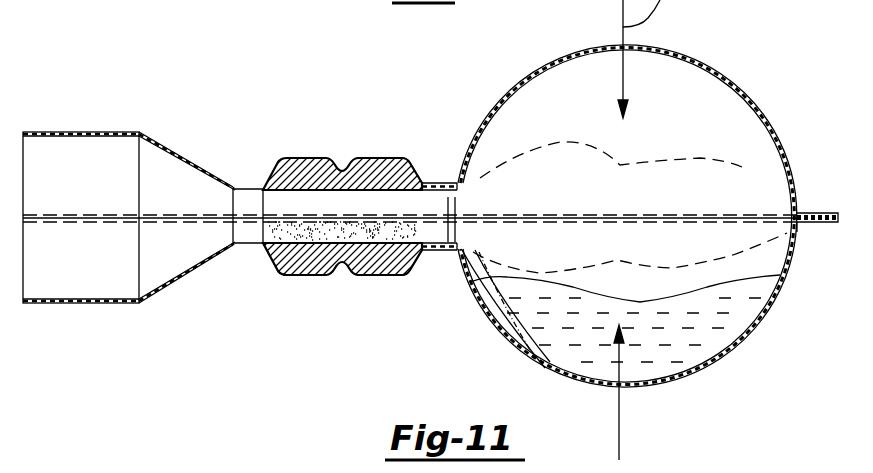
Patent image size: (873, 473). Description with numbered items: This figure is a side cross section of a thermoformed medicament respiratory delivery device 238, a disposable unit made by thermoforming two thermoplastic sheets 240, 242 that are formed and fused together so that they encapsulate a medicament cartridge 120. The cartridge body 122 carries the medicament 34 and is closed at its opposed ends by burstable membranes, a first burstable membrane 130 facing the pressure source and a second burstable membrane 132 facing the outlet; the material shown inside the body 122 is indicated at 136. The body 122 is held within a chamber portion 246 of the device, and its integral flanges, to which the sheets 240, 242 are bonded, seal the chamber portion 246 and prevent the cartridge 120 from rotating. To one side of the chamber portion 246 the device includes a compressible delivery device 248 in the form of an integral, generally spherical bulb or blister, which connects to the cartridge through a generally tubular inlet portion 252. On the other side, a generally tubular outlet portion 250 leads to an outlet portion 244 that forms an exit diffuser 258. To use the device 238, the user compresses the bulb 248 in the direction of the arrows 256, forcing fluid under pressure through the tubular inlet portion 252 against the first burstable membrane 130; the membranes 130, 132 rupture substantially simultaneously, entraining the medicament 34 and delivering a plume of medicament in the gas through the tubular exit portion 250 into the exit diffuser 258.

The medicament 34 is at (264, 250).
The medicament cartridge 120 is at (299, 271).
The body 122 is at (316, 158).
The first burstable membrane 130 is at (440, 204).
The burstable membrane 132 is at (233, 232).
The packing material 136 is at (345, 272).
The medicament respiratory delivery device 238 is at (447, 83).
The thermoplastic sheet 240 is at (800, 206).
The thermoplastic sheet 242 is at (800, 230).
The outlet portion 244 is at (188, 145).
The chamber portion 246 is at (392, 152).
The compressible delivery device 248 is at (702, 60).
The tubular outlet portion 250 is at (246, 198).
The tubular inlet portion 252 is at (448, 252).
The arrows 256 is at (620, 440).
The exit diffuser 258 is at (153, 299).